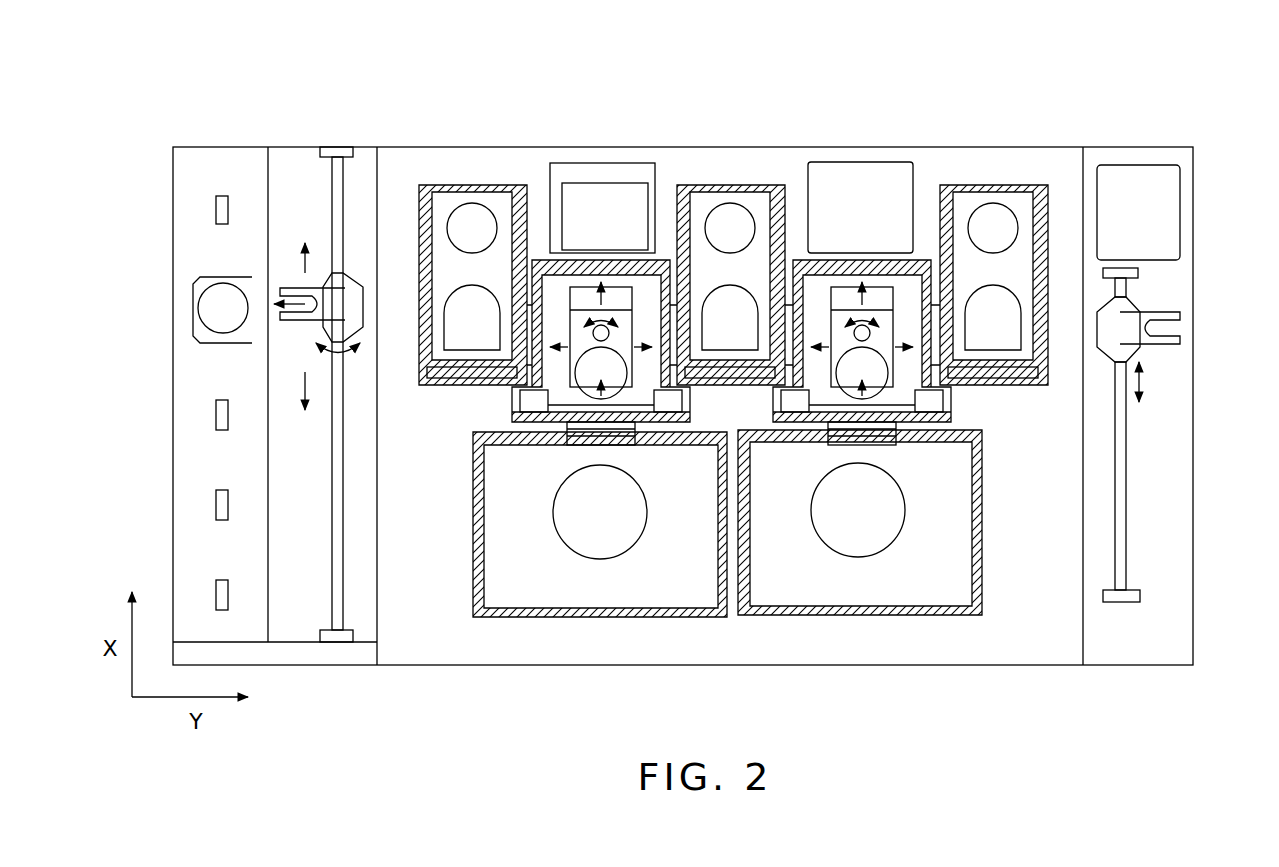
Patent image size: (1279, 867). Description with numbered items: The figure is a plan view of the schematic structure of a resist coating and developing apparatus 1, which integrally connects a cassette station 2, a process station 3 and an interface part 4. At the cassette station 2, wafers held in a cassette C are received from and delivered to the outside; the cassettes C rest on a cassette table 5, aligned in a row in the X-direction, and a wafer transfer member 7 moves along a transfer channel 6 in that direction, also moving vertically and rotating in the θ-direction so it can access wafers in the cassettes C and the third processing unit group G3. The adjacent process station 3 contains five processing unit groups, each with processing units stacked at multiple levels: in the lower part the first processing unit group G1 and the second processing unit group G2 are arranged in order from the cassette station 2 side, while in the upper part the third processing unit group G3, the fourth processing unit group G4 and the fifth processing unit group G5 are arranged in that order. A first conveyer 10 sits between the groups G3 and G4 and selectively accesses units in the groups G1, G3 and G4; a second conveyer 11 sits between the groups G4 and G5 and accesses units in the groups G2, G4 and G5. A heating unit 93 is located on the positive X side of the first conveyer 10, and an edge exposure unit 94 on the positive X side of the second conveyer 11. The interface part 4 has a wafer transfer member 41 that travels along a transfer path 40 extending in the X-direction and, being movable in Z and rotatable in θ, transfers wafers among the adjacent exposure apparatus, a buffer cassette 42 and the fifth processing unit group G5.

The resist coating and developing apparatus 1 is at (729, 54).
The cassette station 2 is at (299, 143).
The process station 3 is at (780, 142).
The interface part 4 is at (1116, 142).
The cassette table 5 is at (236, 147).
The transfer channel 6 is at (345, 188).
The wafer transfer member 7 is at (301, 334).
The cassette C is at (197, 276).
The first processing unit group G1 is at (598, 620).
The second processing unit group G2 is at (843, 619).
The third processing unit group G3 is at (475, 178).
The fourth processing unit group G4 is at (725, 178).
The fifth processing unit group G5 is at (994, 178).
The first conveyer 10 is at (637, 373).
The second conveyer 11 is at (908, 385).
The transfer path 40 is at (1128, 578).
The wafer transfer member 41 is at (1158, 313).
The buffer cassette 42 is at (1180, 200).
The heating unit 93 is at (603, 183).
The edge exposure unit 94 is at (880, 162).